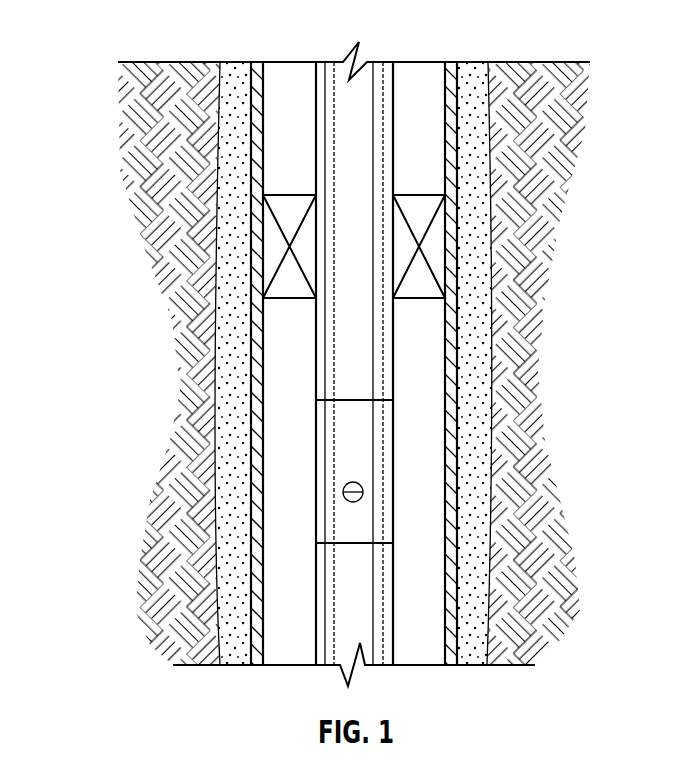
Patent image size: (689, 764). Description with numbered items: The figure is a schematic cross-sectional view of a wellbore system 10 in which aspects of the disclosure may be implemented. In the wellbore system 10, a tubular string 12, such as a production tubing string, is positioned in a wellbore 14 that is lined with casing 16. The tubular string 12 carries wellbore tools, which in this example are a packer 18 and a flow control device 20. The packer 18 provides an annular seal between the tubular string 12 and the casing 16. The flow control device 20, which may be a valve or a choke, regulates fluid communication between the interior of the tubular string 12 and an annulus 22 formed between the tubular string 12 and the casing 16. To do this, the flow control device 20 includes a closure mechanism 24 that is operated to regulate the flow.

The wellbore system 10 is at (166, 28).
The tubular string 12 is at (398, 84).
The wellbore 14 is at (222, 132).
The casing 16 is at (248, 527).
The packer 18 is at (412, 196).
The flow control device 20 is at (394, 407).
The annulus 22 is at (292, 428).
The closure mechanism 24 is at (347, 501).